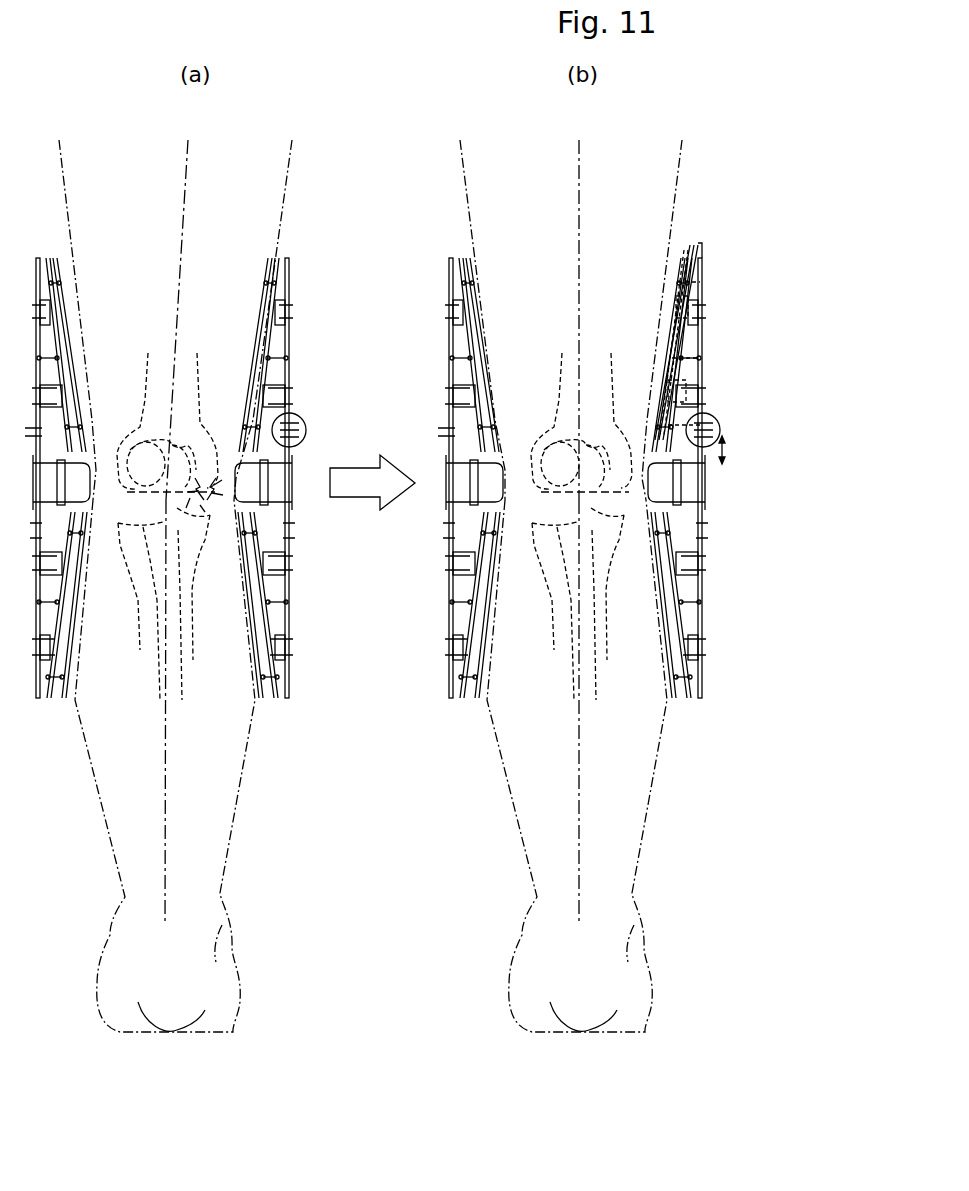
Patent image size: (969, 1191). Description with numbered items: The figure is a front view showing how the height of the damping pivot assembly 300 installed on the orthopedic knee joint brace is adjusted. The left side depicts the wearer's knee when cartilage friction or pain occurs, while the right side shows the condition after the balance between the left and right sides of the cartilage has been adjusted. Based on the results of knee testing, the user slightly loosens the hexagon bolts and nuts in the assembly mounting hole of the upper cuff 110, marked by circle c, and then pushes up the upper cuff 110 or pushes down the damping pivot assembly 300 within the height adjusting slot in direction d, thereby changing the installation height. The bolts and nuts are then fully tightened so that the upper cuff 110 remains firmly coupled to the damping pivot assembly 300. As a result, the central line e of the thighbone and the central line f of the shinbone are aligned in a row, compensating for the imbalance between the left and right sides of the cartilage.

The upper cuff 110 is at (290, 278).
The damping pivot assembly 300 is at (305, 472).
The circle C c is at (306, 421).
The direction d is at (730, 450).
The central line of the thighbone e is at (182, 256).
The central line of the shinbone f is at (165, 838).